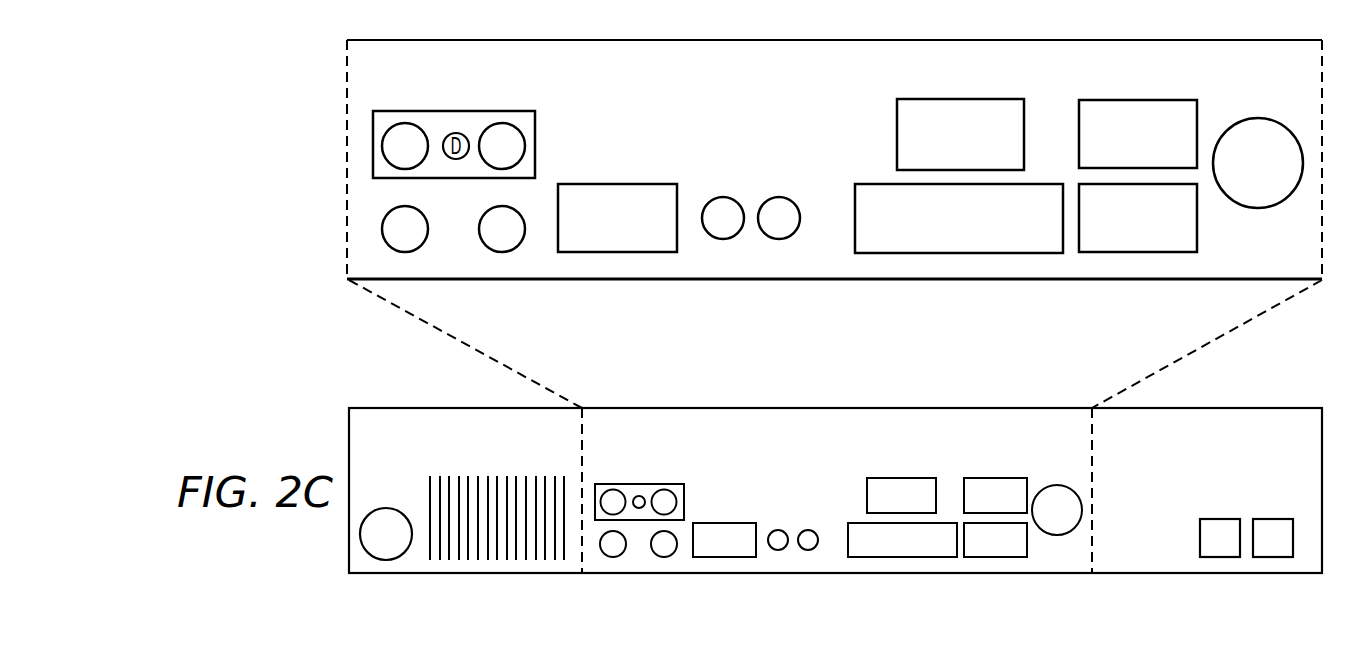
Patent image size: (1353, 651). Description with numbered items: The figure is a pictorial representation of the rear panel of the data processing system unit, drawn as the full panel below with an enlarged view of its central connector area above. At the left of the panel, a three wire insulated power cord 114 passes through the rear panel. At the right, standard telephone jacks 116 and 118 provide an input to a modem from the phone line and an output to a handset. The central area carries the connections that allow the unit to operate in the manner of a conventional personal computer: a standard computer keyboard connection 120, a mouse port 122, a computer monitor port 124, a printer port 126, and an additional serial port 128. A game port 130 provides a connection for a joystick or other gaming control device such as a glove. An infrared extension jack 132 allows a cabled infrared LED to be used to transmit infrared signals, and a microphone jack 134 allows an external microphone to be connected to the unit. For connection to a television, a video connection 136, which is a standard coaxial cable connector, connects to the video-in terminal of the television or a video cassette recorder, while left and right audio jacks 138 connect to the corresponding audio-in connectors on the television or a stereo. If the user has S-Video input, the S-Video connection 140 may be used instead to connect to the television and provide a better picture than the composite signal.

The power cord 114 is at (390, 508).
The telephone jack 116 is at (1220, 519).
The telephone jack 118 is at (1273, 519).
The computer keyboard connection 120 is at (1258, 117).
The mouse port 122 is at (1138, 100).
The computer monitor port 124 is at (960, 99).
The printer port 126 is at (868, 183).
The additional serial port 128 is at (1197, 233).
The game port 130 is at (617, 183).
The infrared extension jack 132 is at (722, 197).
The microphone jack 134 is at (780, 197).
The video connection 136 is at (502, 122).
The left and right audio jacks 138 is at (405, 122).
The S-Video connection 140 is at (485, 246).